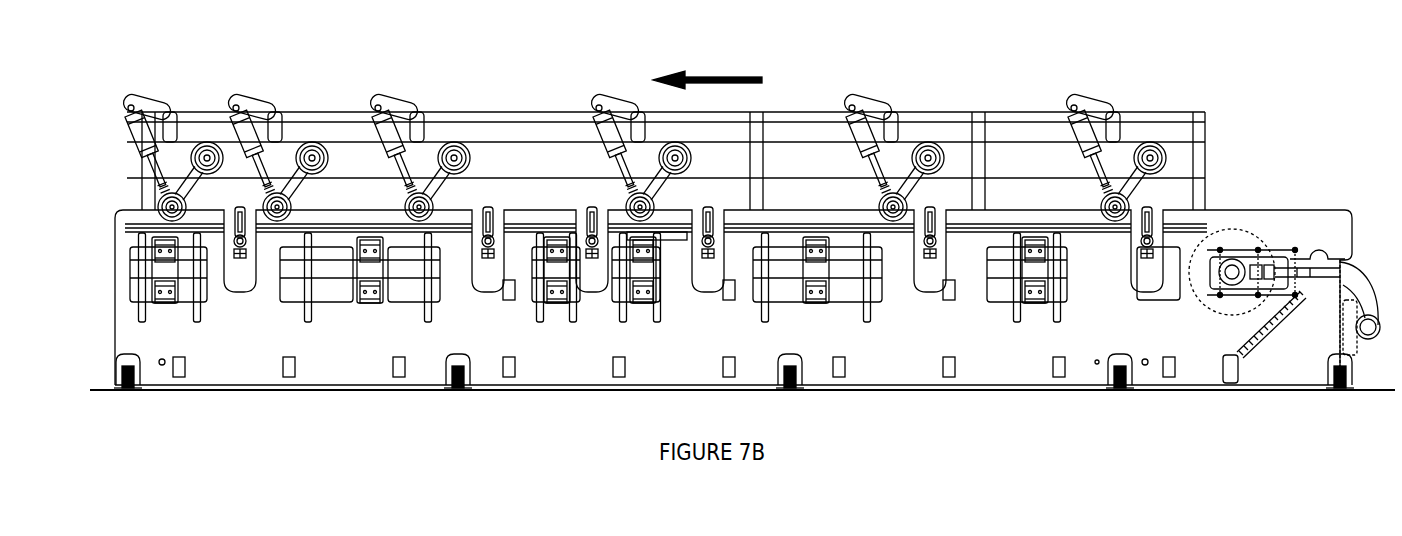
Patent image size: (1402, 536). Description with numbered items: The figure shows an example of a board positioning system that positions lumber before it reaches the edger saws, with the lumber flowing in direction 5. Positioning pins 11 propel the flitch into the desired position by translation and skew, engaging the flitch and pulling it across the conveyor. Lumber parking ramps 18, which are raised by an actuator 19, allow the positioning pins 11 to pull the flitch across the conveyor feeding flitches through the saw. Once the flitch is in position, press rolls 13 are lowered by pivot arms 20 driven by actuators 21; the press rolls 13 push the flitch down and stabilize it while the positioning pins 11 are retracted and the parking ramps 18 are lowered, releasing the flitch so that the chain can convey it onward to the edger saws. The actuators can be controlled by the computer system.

The direction 5 is at (726, 74).
The positioning pins 11 is at (245, 207).
The press rolls 13 is at (160, 197).
The lumber parking ramps 18 is at (328, 226).
The actuator 19 is at (181, 245).
The pivot arms 20 is at (450, 181).
The actuators 21 is at (395, 148).